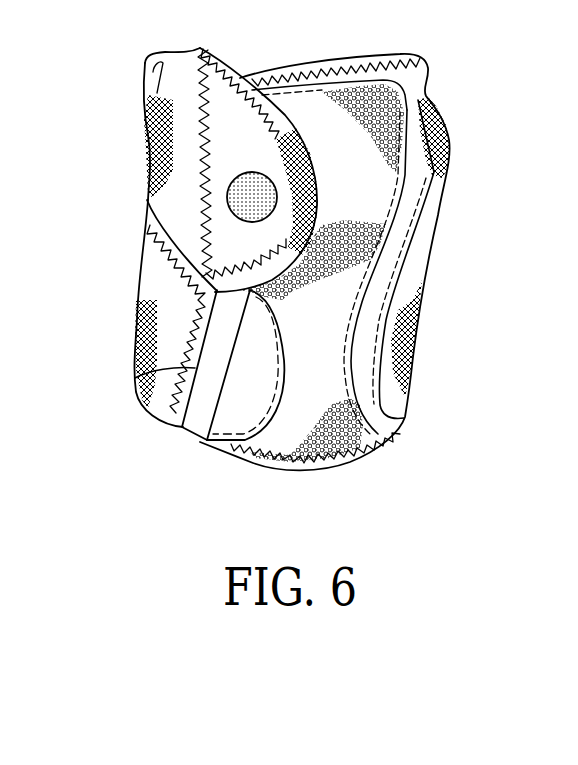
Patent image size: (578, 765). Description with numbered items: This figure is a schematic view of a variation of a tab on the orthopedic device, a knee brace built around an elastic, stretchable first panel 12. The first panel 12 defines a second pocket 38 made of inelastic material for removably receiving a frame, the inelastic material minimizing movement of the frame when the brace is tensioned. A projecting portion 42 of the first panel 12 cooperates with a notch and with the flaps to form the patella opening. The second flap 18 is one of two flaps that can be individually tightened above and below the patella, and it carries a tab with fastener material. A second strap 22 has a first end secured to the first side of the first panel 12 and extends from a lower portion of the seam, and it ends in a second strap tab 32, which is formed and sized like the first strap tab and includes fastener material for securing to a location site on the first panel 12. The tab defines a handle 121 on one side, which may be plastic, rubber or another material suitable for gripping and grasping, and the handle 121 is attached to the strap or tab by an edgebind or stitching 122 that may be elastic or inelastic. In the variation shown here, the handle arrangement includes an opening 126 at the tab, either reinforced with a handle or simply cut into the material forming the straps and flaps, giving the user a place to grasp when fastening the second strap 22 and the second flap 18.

The first panel 12 is at (430, 100).
The second flap 18 is at (192, 168).
The second strap 22 is at (137, 340).
The second strap tab 32 is at (170, 416).
The second pocket 38 is at (415, 357).
The projecting portion 42 is at (357, 252).
The handle 121 is at (190, 428).
The stitching 122 is at (148, 383).
The opening 126 is at (258, 194).